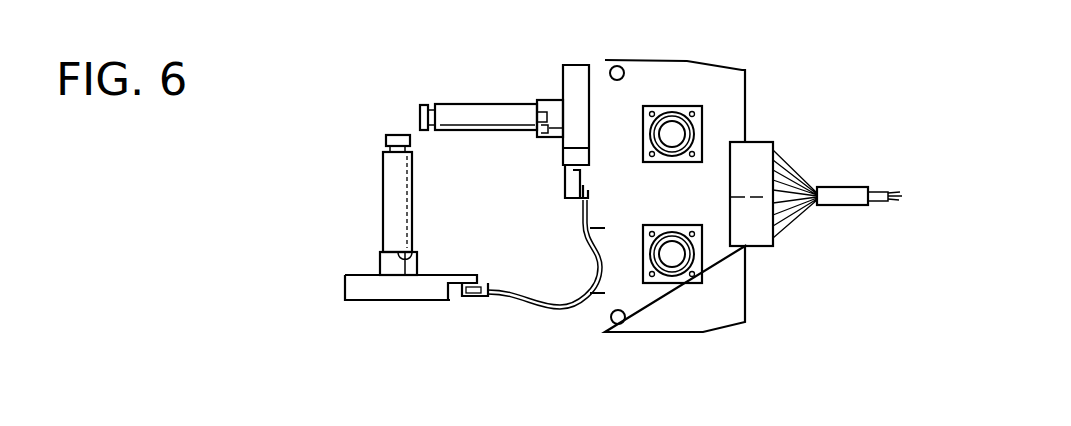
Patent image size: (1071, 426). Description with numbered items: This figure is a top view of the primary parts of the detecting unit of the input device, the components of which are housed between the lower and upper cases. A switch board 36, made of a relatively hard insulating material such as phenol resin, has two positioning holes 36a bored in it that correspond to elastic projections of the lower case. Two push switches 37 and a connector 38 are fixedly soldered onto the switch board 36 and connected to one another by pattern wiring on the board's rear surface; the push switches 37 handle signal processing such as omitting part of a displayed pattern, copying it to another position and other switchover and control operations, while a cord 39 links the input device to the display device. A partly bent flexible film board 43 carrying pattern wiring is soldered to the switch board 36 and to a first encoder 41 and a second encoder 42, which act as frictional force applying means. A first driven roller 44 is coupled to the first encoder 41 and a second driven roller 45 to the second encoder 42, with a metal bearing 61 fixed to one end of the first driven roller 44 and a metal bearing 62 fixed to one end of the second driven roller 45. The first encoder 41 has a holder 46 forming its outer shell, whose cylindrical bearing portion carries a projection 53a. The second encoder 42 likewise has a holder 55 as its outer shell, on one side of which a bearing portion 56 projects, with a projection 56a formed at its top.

The switch board 36 is at (745, 93).
The positioning holes 36a is at (625, 72).
The push switches 37 is at (678, 115).
The connector 38 is at (770, 142).
The cord 39 is at (878, 186).
The first encoder 41 is at (563, 83).
The second encoder 42 is at (419, 300).
The flexible film board 43 is at (540, 310).
The first driven roller 44 is at (477, 104).
The second driven roller 45 is at (383, 180).
The holder 46 is at (580, 65).
The projection 53a is at (540, 133).
The holder 55 is at (350, 287).
The bearing portion 56 is at (381, 258).
The projection 56a is at (415, 262).
The metal bearing 61 is at (424, 105).
The metal bearing 62 is at (387, 140).